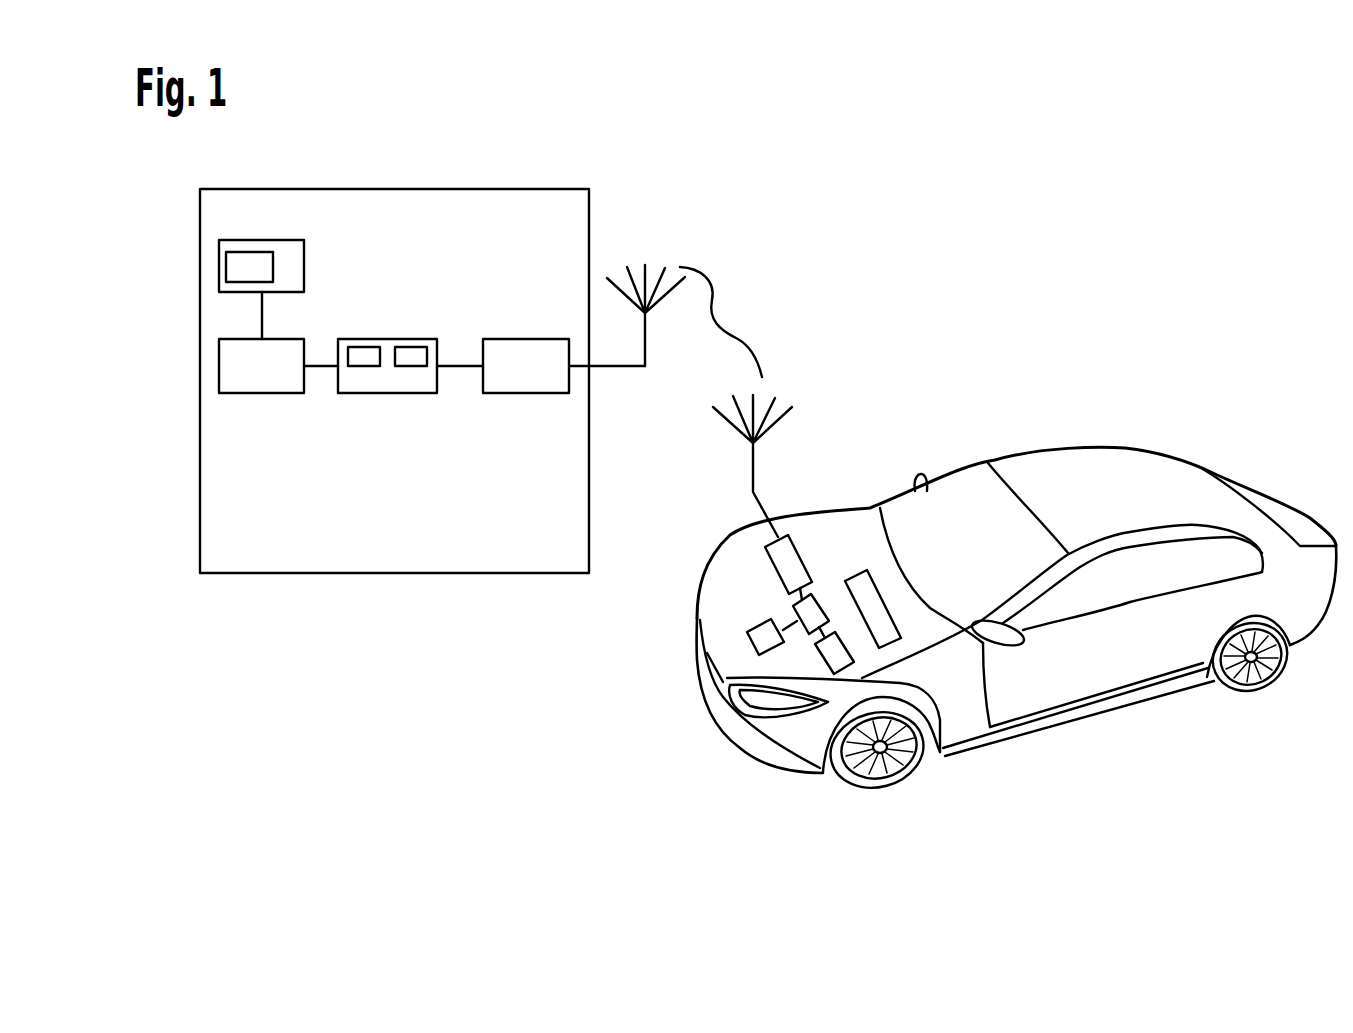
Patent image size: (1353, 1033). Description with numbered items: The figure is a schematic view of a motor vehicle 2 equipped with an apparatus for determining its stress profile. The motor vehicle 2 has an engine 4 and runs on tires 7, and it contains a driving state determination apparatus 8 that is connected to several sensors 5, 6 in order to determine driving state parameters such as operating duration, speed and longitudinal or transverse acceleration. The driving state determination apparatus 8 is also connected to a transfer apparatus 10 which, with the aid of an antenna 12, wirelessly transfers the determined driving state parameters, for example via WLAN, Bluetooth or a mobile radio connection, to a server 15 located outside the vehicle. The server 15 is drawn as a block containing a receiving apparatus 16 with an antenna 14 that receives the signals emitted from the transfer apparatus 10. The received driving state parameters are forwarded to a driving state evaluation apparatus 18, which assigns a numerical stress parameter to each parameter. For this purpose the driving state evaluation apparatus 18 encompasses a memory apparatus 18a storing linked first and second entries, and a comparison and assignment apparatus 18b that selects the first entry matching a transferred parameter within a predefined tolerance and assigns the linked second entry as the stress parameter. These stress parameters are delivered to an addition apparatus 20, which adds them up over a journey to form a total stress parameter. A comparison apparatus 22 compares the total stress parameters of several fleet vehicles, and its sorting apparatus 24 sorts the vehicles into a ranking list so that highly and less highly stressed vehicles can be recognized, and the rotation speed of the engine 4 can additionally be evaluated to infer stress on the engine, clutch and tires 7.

The motor vehicle 2 is at (1067, 468).
The engine 4 is at (880, 607).
The sensor 5 is at (748, 637).
The sensor 6 is at (828, 655).
The tire 7 is at (904, 760).
The driving state determination apparatus 8 is at (820, 616).
The transfer apparatus 10 is at (788, 563).
The antenna 12 is at (769, 408).
The antenna 14 is at (660, 273).
The server 15 is at (603, 174).
The receiving apparatus 16 is at (530, 384).
The driving state evaluation apparatus 18 is at (390, 384).
The memory apparatus 18a is at (418, 352).
The comparison and assignment apparatus 18b is at (358, 352).
The addition apparatus 20 is at (265, 384).
The comparison apparatus 22 is at (288, 248).
The sorting apparatus 24 is at (237, 267).